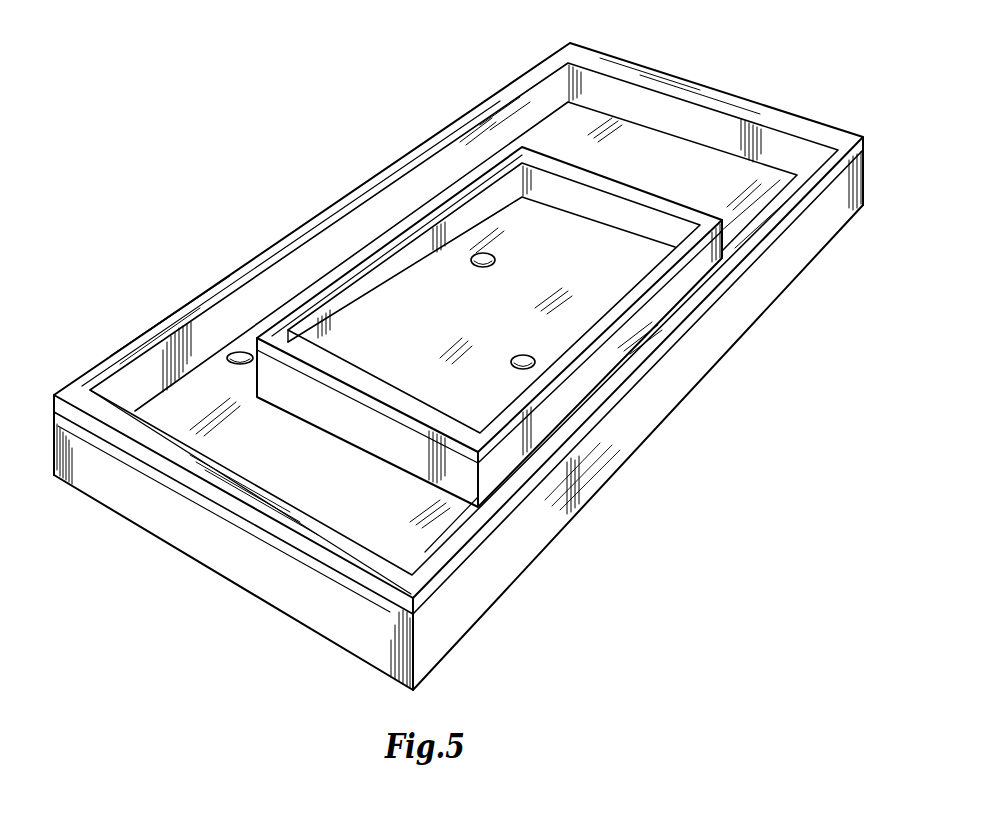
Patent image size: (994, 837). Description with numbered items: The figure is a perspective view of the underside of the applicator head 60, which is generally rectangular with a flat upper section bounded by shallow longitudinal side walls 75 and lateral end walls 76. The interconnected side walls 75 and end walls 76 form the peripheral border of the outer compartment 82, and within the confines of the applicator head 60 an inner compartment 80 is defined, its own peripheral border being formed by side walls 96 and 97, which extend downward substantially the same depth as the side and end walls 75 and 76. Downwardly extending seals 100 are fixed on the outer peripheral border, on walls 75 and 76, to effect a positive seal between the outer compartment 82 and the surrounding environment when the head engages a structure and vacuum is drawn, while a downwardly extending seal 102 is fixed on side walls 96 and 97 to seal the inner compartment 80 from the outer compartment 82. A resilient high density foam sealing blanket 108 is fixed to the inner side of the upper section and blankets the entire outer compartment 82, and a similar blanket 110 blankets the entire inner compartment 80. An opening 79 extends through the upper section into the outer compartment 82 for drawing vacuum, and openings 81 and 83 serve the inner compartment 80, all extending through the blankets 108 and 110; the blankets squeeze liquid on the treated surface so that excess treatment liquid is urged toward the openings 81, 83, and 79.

The applicator head 60 is at (498, 132).
The longitudinal side walls 75 is at (508, 127).
The lateral end walls 76 is at (777, 158).
The opening 79 is at (243, 350).
The inner compartment 80 is at (684, 292).
The opening 81 is at (524, 355).
The outer compartment 82 is at (378, 522).
The opening 83 is at (487, 254).
The side wall 96 is at (592, 298).
The side wall 97 is at (302, 410).
The seals 100 is at (778, 108).
The seal 102 is at (648, 186).
The sealing blanket 108 is at (475, 323).
The blanket 110 is at (481, 280).